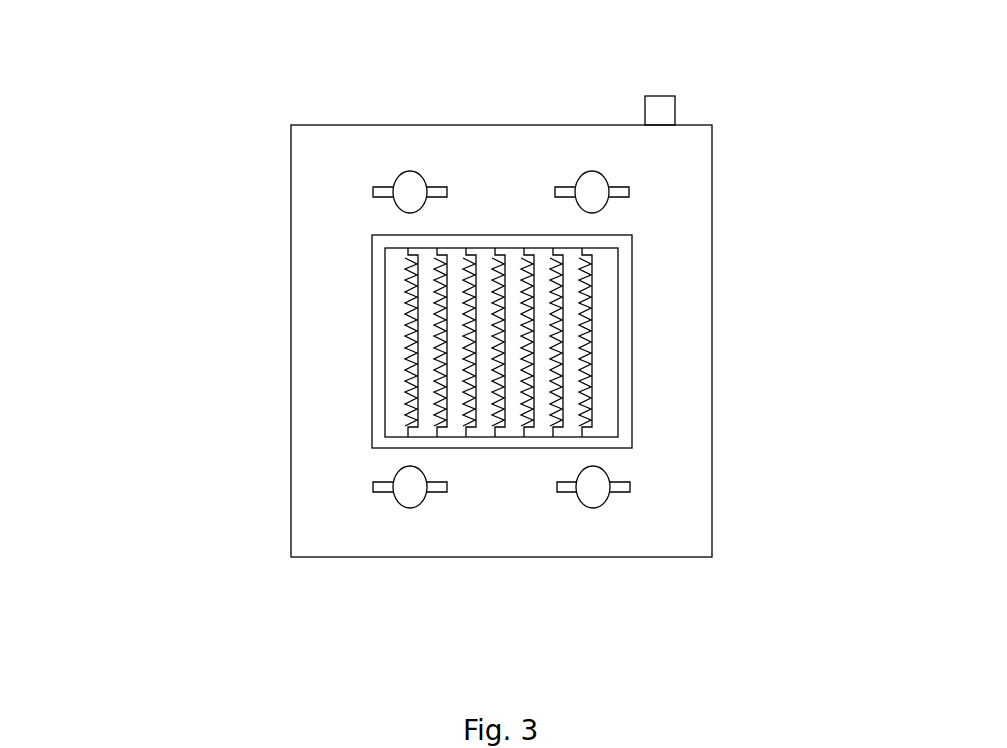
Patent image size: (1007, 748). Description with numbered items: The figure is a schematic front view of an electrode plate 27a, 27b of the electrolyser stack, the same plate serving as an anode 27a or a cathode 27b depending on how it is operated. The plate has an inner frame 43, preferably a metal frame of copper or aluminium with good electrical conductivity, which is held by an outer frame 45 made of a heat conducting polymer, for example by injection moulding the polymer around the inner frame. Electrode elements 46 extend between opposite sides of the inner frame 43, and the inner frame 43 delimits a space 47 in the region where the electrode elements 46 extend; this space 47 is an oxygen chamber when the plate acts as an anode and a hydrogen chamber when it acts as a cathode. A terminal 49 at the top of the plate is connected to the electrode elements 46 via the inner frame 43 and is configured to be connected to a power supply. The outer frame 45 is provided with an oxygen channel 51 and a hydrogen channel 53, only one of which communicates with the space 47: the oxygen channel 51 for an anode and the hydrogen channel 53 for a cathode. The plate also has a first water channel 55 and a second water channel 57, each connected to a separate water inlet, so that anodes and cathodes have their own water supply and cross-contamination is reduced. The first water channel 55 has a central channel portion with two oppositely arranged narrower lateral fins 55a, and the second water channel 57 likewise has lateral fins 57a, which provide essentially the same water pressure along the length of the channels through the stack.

The electrode plate 27a is at (231, 246).
The electrode plate 27b is at (502, 341).
The inner frame 43 is at (620, 315).
The outer frame 45 is at (712, 212).
The electrode elements 46 is at (420, 415).
The space 47 is at (606, 403).
The terminal 49 is at (660, 96).
The oxygen channel 51 is at (411, 185).
The hydrogen channel 53 is at (593, 185).
The first water channel 55 is at (409, 495).
The lateral fins 55a is at (382, 496).
The second water channel 57 is at (592, 495).
The lateral fins 57a is at (565, 496).